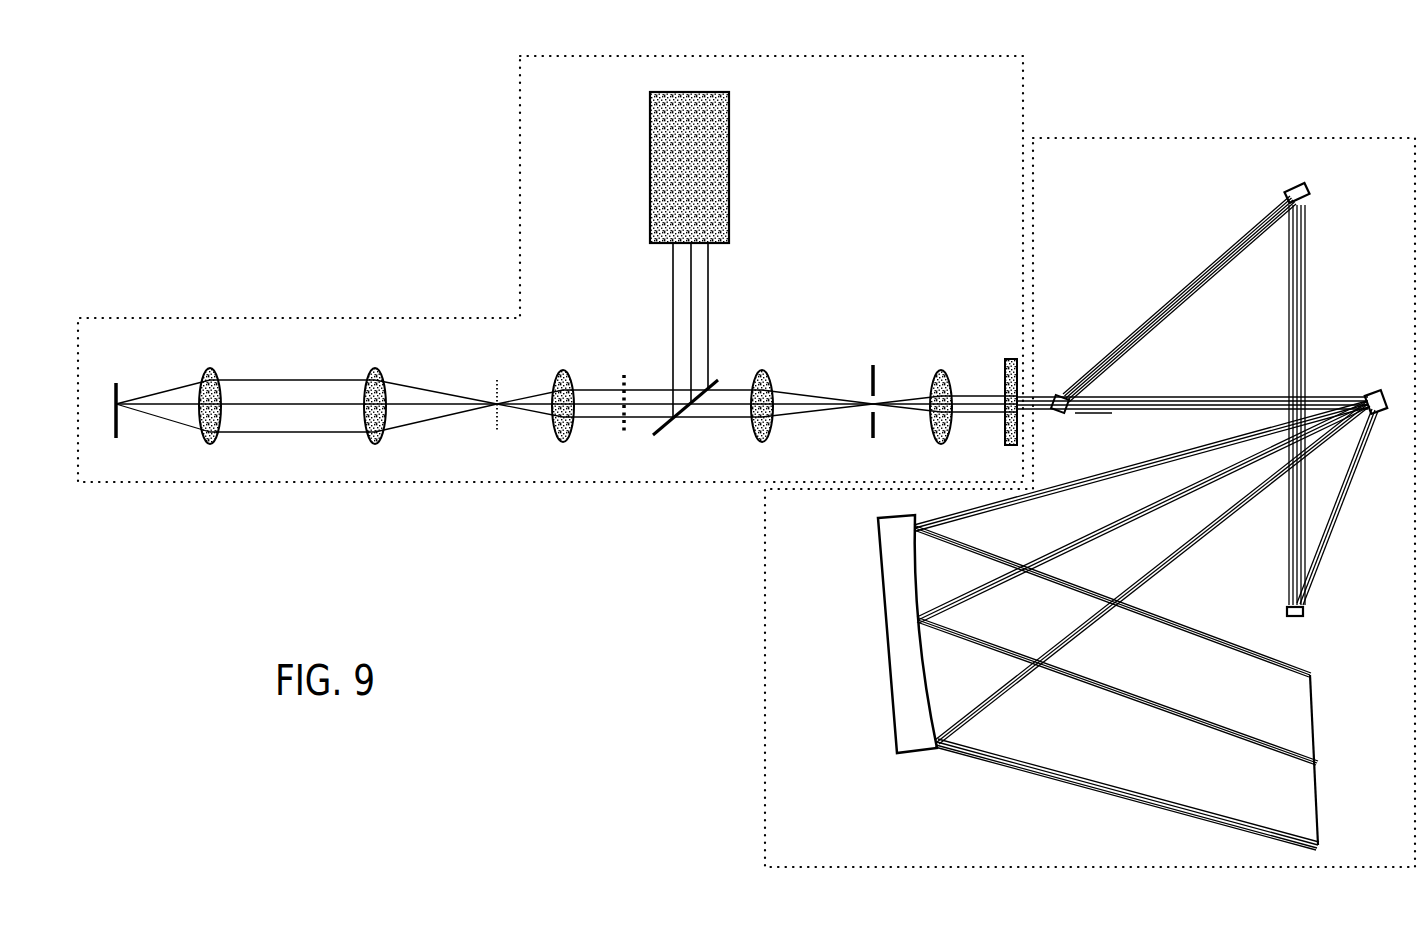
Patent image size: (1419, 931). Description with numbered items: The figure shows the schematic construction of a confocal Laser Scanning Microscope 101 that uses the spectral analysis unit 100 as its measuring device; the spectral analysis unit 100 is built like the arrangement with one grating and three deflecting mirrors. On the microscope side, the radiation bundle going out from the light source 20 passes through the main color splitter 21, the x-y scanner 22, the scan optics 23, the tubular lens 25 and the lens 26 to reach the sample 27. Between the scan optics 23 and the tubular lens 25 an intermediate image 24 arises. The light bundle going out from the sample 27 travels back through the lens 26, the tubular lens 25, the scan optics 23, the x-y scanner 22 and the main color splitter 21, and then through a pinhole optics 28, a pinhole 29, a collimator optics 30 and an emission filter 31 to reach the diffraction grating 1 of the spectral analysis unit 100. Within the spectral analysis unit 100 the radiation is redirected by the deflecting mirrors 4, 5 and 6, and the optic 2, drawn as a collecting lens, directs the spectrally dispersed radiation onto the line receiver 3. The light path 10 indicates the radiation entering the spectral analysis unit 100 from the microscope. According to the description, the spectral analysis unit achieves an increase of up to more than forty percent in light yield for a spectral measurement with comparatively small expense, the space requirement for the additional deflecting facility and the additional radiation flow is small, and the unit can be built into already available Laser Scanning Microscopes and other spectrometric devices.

The diffraction grating 1 is at (1385, 395).
The optic 2 is at (897, 634).
The line receiver 3 is at (1326, 760).
The deflecting mirror 4 is at (1309, 618).
The deflecting mirror 5 is at (1302, 187).
The deflecting mirror 6 is at (1060, 386).
The light beam 10 is at (1042, 394).
The light source 20 is at (709, 254).
The main color splitter 21 is at (685, 416).
The x-y scanner 22 is at (624, 418).
The scan optics 23 is at (562, 393).
The intermediate image 24 is at (494, 420).
The tubular lens 25 is at (365, 420).
The lens 26 is at (199, 387).
The sample 27 is at (114, 434).
The pinhole optics 28 is at (762, 389).
The pinhole 29 is at (867, 416).
The collimator optics 30 is at (941, 392).
The emission filter 31 is at (1003, 389).
The spectral analysis unit 100 is at (1068, 502).
The confocal Laser Scanning Microscope 101 is at (550, 269).